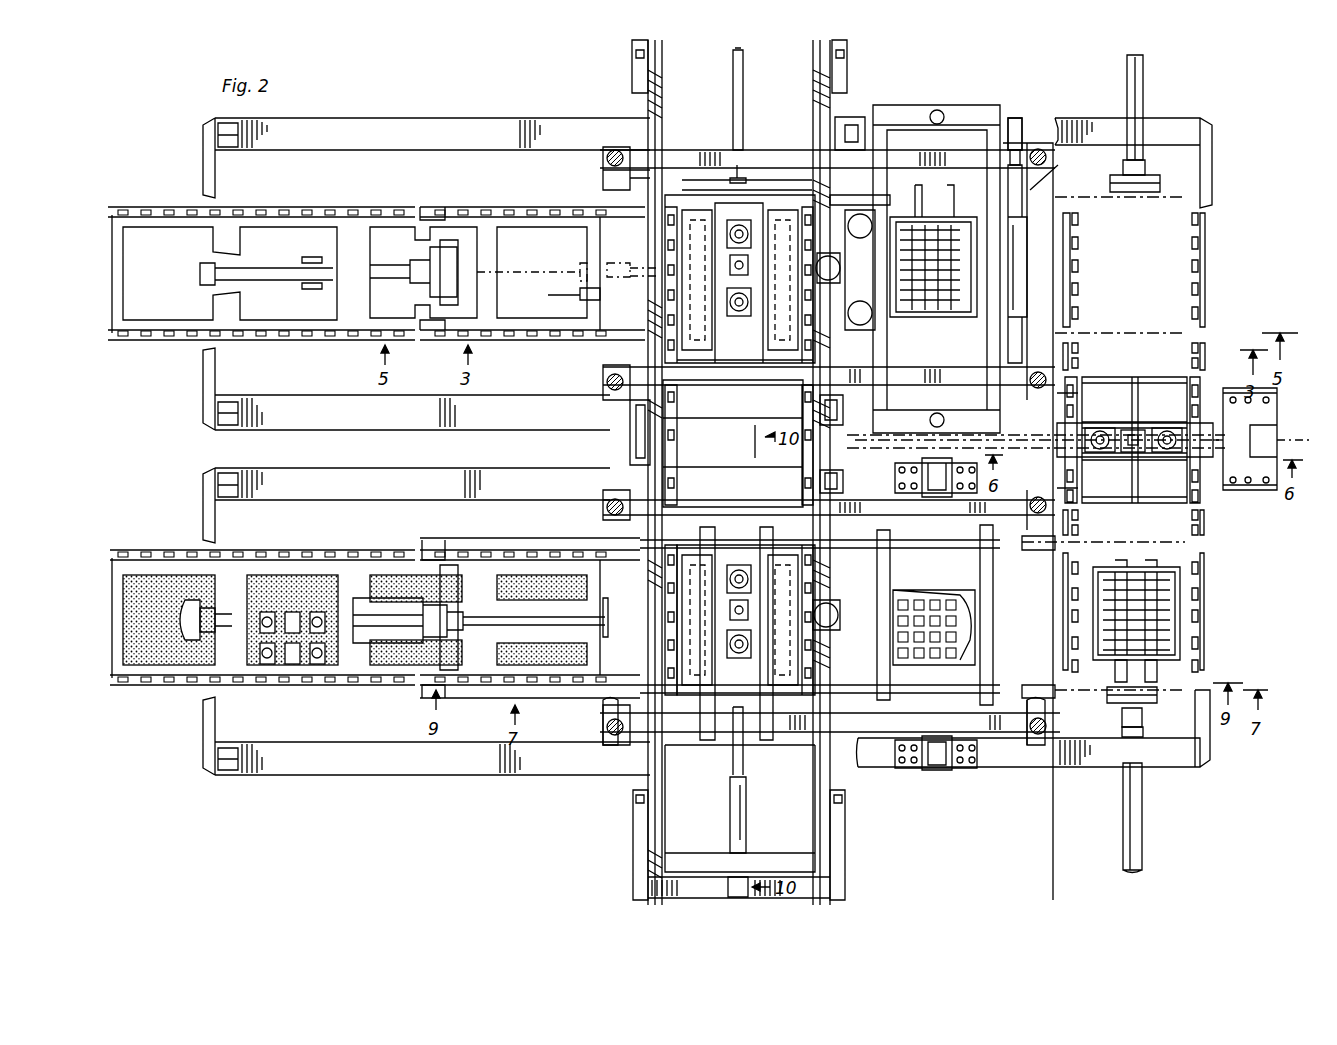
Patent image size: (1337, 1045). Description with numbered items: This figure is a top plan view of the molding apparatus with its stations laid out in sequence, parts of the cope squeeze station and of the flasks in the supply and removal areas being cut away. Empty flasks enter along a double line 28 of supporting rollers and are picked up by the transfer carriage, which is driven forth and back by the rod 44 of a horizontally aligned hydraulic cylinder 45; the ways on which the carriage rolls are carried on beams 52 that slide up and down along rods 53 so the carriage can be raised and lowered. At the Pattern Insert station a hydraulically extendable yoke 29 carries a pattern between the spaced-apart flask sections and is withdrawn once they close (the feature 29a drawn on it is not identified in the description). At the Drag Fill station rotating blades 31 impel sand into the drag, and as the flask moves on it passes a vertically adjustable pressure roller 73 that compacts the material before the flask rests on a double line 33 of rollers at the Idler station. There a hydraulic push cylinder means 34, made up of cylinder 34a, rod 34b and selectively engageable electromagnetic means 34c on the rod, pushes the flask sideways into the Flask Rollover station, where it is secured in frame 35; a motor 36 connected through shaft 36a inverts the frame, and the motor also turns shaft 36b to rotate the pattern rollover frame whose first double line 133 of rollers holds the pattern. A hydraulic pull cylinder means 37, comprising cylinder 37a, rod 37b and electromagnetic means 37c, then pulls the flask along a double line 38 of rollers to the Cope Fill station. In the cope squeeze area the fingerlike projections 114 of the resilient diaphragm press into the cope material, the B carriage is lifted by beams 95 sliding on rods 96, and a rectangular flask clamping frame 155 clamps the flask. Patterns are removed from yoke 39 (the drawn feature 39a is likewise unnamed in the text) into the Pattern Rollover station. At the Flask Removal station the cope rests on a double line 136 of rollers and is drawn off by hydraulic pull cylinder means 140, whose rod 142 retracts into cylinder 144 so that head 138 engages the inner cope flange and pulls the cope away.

The double line of supporting rollers 28 is at (240, 212).
The horizontally aligned hydraulic cylinder 45 is at (272, 268).
The rod 44 is at (548, 248).
The hydraulically extendable yoke 29 is at (690, 193).
The coupling 29a is at (605, 290).
The beams 52 is at (605, 160).
The rods 53 is at (608, 150).
The rectangular flask clamping frame 155 is at (926, 117).
The rotating blades 31 is at (905, 310).
The vertically adjustable pressure roller 73 is at (1020, 270).
The hydraulic push cylinder means 34 is at (1118, 95).
The cylinder 34a is at (1144, 95).
The rod 34b is at (1122, 170).
The selectively engageable electromagnetic means 34c is at (1162, 180).
The double line of supporting rollers 33 is at (1078, 267).
The frame 35 is at (1118, 362).
The motor 36 is at (1283, 440).
The shaft 36a is at (1238, 470).
The shaft 36b is at (905, 445).
The first double line of rollers 133 is at (677, 440).
The double line of supporting rollers 38 is at (1078, 563).
The hydraulic pull cylinder means 140 is at (362, 582).
The double line of rollers 136 is at (405, 683).
The cylinder 144 is at (368, 623).
The rod 142 is at (497, 622).
The head 138 is at (618, 622).
The yoke 39 is at (660, 690).
The slide rail 39a is at (668, 588).
The fingerlike projections 114 is at (915, 655).
The beams 95 is at (604, 730).
The rods 96 is at (615, 740).
The hydraulic pull cylinder means 37 is at (1150, 832).
The cylinder 37a is at (1143, 790).
The rod 37b is at (1120, 705).
The selectively engageable electromagnetic means 37c is at (1160, 695).